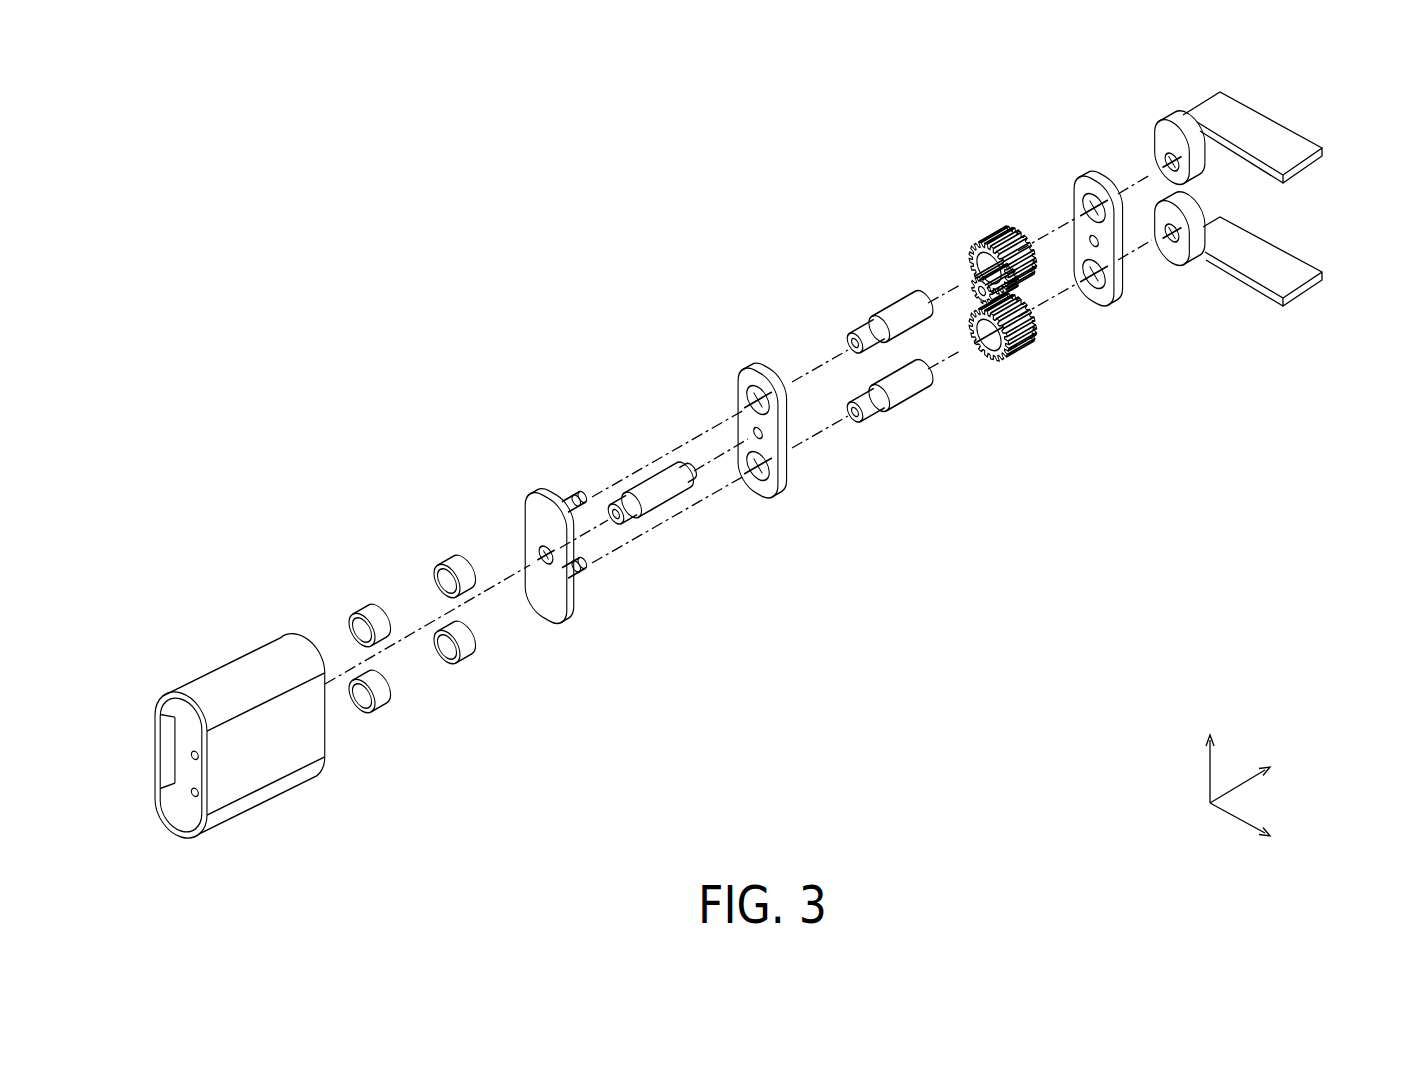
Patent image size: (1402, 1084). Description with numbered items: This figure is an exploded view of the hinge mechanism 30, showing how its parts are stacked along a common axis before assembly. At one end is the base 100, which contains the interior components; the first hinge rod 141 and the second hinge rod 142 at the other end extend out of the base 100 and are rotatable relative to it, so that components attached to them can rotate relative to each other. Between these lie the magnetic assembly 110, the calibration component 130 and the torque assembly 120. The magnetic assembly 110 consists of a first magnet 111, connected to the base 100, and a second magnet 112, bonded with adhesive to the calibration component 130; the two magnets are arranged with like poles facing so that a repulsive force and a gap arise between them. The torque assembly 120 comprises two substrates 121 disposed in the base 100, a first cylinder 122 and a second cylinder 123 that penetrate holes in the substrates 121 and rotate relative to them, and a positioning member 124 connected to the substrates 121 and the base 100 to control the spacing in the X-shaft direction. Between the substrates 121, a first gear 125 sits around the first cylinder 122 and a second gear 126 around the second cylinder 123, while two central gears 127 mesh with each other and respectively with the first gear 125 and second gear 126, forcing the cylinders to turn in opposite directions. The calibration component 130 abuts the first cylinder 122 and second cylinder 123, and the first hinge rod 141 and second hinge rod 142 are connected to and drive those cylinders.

The hinge mechanism 30 is at (120, 100).
The base 100 is at (232, 675).
The magnetic assembly 110 is at (1332, 397).
The first magnet 111 is at (367, 607).
The second magnet 112 is at (450, 558).
The torque assembly 120 is at (1332, 498).
The substrates 121 is at (758, 368).
The first cylinder 122 is at (885, 316).
The second cylinder 123 is at (905, 393).
The positioning member 124 is at (657, 497).
The first gear 125 is at (990, 237).
The second gear 126 is at (1028, 350).
The central gears 127 is at (1037, 288).
The calibration component 130 is at (537, 493).
The first hinge rod 141 is at (1277, 140).
The second hinge rod 142 is at (1277, 263).